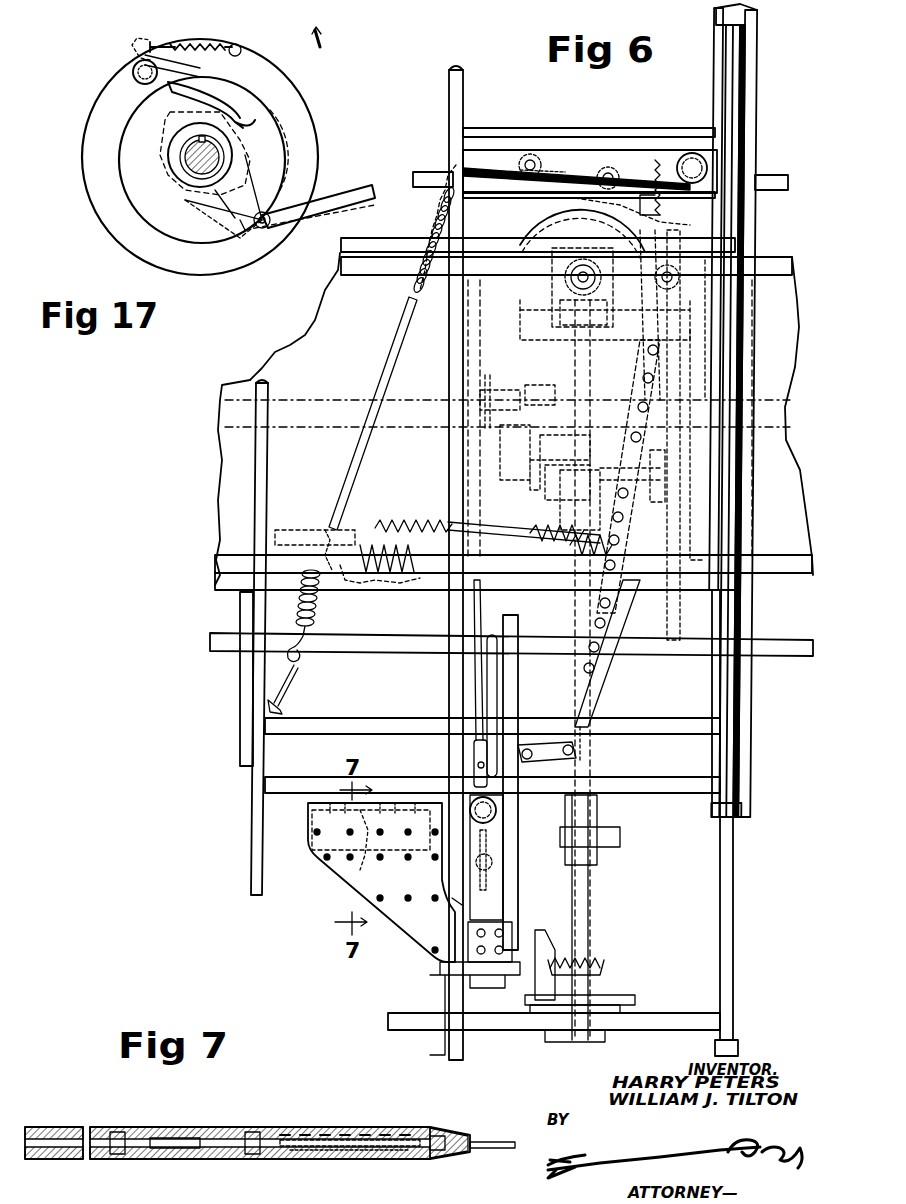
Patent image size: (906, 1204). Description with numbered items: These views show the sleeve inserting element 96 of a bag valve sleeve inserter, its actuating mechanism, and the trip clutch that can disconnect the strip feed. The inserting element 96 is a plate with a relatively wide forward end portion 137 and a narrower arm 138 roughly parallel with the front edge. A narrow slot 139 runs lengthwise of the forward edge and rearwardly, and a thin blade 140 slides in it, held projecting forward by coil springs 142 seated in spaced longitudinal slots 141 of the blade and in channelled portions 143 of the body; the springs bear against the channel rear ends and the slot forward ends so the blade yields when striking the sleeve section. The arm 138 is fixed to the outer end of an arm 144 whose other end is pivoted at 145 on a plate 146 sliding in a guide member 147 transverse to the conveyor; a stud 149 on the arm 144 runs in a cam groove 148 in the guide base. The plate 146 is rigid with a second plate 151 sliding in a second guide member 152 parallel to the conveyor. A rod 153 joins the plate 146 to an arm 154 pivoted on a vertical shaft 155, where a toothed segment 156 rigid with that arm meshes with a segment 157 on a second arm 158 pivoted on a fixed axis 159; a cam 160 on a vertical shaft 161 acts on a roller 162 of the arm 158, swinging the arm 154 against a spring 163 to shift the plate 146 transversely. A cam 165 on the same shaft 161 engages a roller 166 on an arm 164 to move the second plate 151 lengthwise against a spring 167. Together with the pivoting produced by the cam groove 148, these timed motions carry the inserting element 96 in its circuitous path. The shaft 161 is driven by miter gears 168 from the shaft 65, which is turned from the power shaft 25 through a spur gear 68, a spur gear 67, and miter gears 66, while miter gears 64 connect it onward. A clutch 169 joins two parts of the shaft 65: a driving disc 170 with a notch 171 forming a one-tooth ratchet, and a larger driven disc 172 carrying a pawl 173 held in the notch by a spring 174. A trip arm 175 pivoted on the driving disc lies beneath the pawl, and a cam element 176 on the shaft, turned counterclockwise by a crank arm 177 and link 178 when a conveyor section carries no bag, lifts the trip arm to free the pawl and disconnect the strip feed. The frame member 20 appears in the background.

In FIG. 6, the frame beam 20 is at (775, 640).
In FIG. 6, the power shaft 25 is at (416, 405).
In FIG. 6, the miter gears 64 is at (590, 972).
In FIG. 17, the shaft 65 is at (185, 165).
In FIG. 6, the shaft 65 is at (595, 380).
In FIG. 6, the miter gears 66 is at (580, 470).
In FIG. 6, the spur gear 67 is at (510, 515).
In FIG. 6, the spur gear 68 is at (533, 378).
In FIG. 6, the sleeve inserting element 96 is at (340, 860).
In FIG. 7, the sleeve inserting element 96 is at (68, 1125).
In FIG. 6, the forward end portion 137 is at (310, 845).
In FIG. 7, the forward end portion 137 is at (292, 1130).
In FIG. 6, the arm 138 is at (415, 945).
In FIG. 7, the slot 139 is at (265, 1128).
In FIG. 7, the blade 140 is at (225, 1130).
In FIG. 6, the longitudinal slots 141 is at (365, 865).
In FIG. 7, the longitudinal slots 141 is at (400, 1122).
In FIG. 7, the coil spring 142 is at (425, 1135).
In FIG. 7, the channelled portions 143 is at (310, 1160).
In FIG. 6, the arm 144 is at (440, 908).
In FIG. 6, the pivot 145 is at (490, 822).
In FIG. 6, the plate 146 is at (497, 805).
In FIG. 6, the guide member 147 is at (515, 683).
In FIG. 6, the cam groove 148 is at (490, 707).
In FIG. 6, the stud 149 is at (490, 865).
In FIG. 6, the second plate 151 is at (580, 765).
In FIG. 6, the second guide member 152 is at (648, 800).
In FIG. 6, the rod 153 is at (482, 602).
In FIG. 6, the arm 154 is at (500, 153).
In FIG. 6, the vertical shaft 155 is at (688, 160).
In FIG. 6, the toothed segment 156 is at (685, 125).
In FIG. 6, the segment 157 is at (645, 140).
In FIG. 6, the second arm 158 is at (567, 145).
In FIG. 6, the fixed axis 159 is at (516, 200).
In FIG. 6, the cam 160 is at (610, 235).
In FIG. 6, the vertical shaft 161 is at (580, 278).
In FIG. 6, the roller 162 is at (612, 222).
In FIG. 6, the spring 163 is at (320, 530).
In FIG. 6, the arm 164 is at (665, 445).
In FIG. 6, the cam 165 is at (628, 340).
In FIG. 6, the roller 166 is at (680, 340).
In FIG. 6, the spring 167 is at (420, 505).
In FIG. 6, the miter gears 168 is at (525, 340).
In FIG. 17, the clutch 169 is at (300, 52).
In FIG. 6, the clutch 169 is at (620, 838).
In FIG. 17, the driving disc 170 is at (270, 155).
In FIG. 17, the notch 171 is at (200, 77).
In FIG. 17, the driven disc 172 is at (305, 128).
In FIG. 17, the pawl 173 is at (140, 88).
In FIG. 17, the spring 174 is at (208, 47).
In FIG. 17, the trip arm 175 is at (235, 110).
In FIG. 17, the cam element 176 is at (160, 125).
In FIG. 17, the crank arm 177 is at (200, 220).
In FIG. 17, the link 178 is at (345, 195).